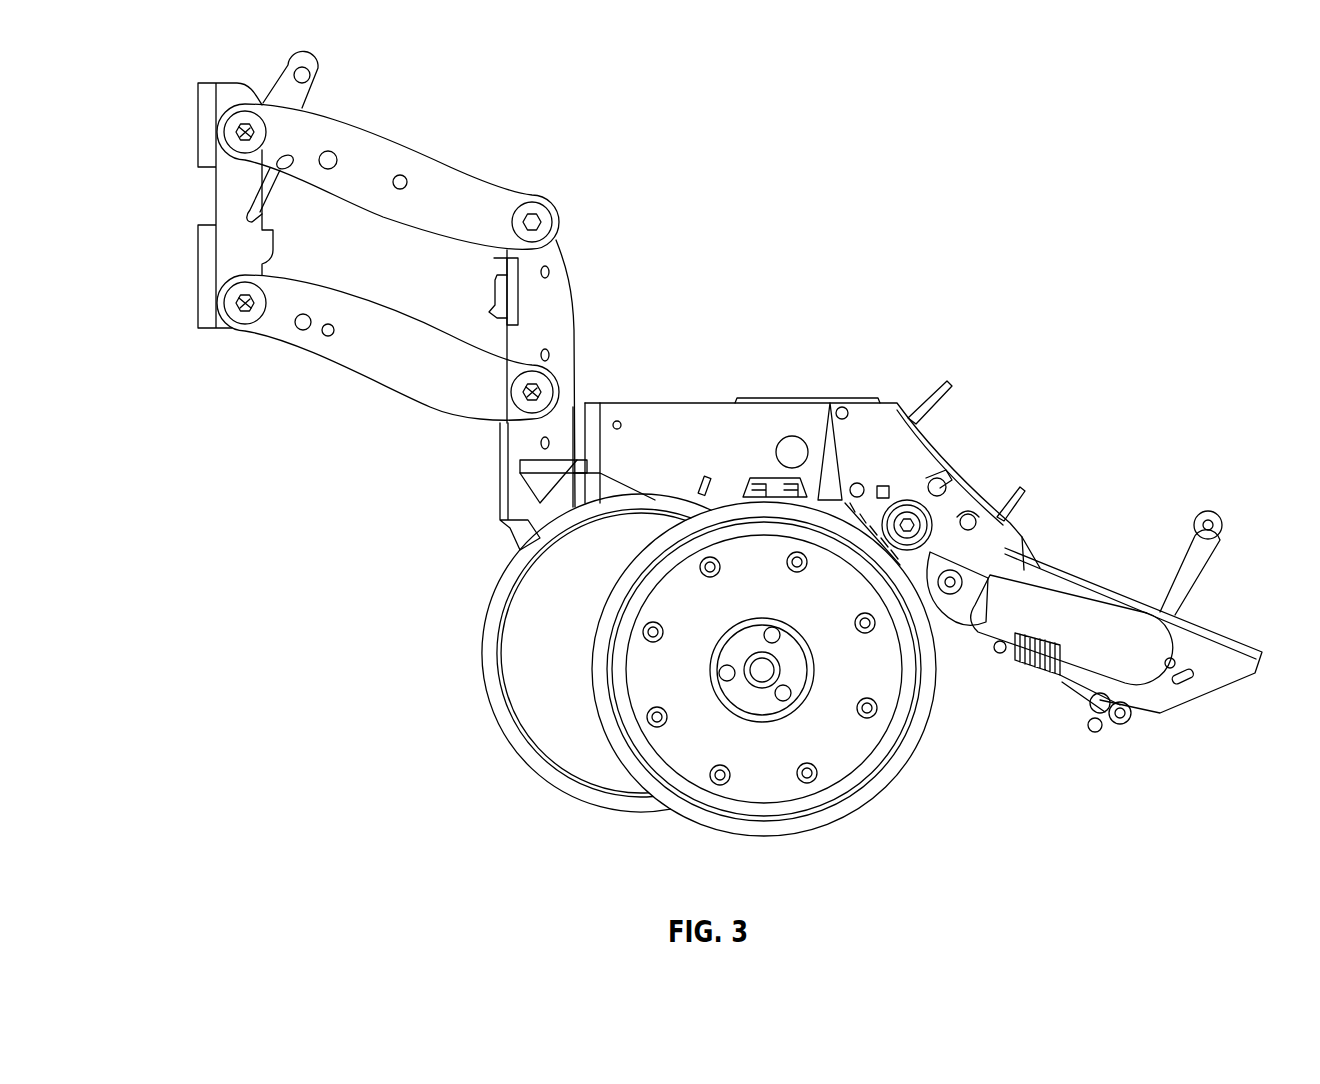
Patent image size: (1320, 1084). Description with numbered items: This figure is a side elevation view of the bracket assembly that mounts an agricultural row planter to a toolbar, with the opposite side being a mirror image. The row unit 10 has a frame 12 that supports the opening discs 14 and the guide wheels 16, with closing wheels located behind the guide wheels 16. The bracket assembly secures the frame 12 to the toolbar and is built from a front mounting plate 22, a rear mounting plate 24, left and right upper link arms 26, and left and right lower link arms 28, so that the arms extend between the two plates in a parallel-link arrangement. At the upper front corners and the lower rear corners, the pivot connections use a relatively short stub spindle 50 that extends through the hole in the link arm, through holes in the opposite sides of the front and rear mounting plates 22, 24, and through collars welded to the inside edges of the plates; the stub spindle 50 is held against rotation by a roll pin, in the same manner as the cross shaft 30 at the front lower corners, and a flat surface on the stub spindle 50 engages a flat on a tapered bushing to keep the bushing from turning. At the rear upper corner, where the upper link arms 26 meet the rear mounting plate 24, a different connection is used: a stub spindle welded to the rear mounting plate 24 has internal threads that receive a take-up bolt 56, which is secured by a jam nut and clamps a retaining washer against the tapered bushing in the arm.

The row unit 10 is at (694, 317).
The frame 12 is at (798, 397).
The opening discs 14 is at (540, 717).
The guide wheels 16 is at (850, 742).
The front mounting plate 22 is at (228, 183).
The rear mounting plate 24 is at (558, 313).
The upper link arms 26 is at (445, 188).
The lower link arms 28 is at (405, 365).
The cross shaft 30 is at (235, 300).
The stub spindle 50 is at (235, 128).
The take-up bolt 56 is at (548, 218).